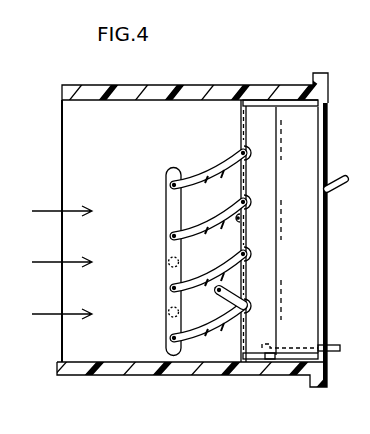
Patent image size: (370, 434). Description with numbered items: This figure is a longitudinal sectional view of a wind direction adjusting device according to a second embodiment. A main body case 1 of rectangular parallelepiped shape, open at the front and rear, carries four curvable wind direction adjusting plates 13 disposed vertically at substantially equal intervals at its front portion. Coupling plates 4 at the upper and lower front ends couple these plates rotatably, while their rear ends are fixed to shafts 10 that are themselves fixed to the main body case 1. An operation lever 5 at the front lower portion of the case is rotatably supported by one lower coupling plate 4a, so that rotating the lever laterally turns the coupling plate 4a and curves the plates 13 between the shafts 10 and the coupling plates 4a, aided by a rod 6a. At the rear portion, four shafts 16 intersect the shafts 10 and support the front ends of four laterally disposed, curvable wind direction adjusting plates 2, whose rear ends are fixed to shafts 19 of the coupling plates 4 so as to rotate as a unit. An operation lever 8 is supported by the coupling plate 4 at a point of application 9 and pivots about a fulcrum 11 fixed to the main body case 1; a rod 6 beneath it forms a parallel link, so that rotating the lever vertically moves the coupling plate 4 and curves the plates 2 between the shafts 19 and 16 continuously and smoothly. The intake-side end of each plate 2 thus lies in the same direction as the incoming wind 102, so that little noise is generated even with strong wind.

The main body case 1 is at (196, 85).
The shafts 10 is at (240, 98).
The coupling plate 4a is at (318, 103).
The wind direction adjusting plates 13 is at (320, 258).
The operation lever 8 is at (340, 178).
The coupling plates 4 is at (168, 210).
The point of application 9 is at (167, 262).
The wind direction adjusting plates 2 is at (212, 172).
The shafts 19 is at (170, 185).
The shafts 16 is at (242, 150).
The fulcrum 11 is at (244, 217).
The rod 6 is at (244, 292).
The operation lever 5 is at (335, 347).
The rod 6a is at (284, 362).
The wind 102 is at (52, 208).